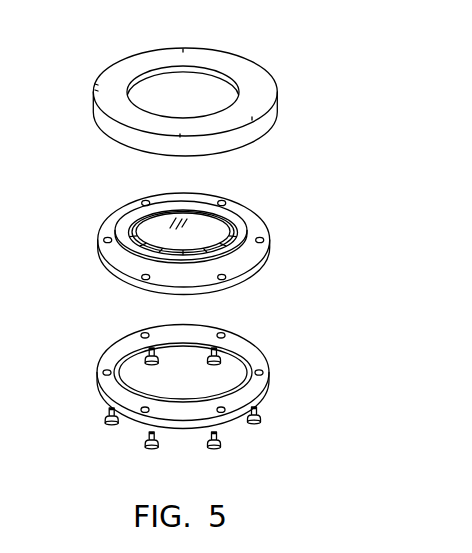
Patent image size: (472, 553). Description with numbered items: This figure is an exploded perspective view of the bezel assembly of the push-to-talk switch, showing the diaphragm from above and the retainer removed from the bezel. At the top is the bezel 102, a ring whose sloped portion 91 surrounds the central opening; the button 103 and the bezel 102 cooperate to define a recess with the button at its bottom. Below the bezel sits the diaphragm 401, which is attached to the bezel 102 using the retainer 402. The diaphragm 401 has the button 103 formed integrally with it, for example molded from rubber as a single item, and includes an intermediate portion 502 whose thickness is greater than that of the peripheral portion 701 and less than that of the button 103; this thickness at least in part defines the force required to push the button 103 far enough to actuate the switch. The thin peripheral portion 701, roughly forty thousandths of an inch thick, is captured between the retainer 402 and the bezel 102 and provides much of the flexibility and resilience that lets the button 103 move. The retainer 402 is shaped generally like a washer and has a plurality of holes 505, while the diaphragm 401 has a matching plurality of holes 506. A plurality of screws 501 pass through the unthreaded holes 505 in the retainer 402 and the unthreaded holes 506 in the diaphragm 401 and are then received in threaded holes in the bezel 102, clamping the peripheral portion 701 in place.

The sloped portion 91 is at (240, 65).
The bezel 102 is at (245, 86).
The button 103 is at (148, 228).
The diaphragm 401 is at (203, 224).
The retainer 402 is at (222, 382).
The screws 501 is at (147, 437).
The intermediate portion 502 is at (202, 223).
The holes 505 is at (146, 334).
The holes 506 is at (222, 200).
The peripheral portion 701 is at (186, 224).